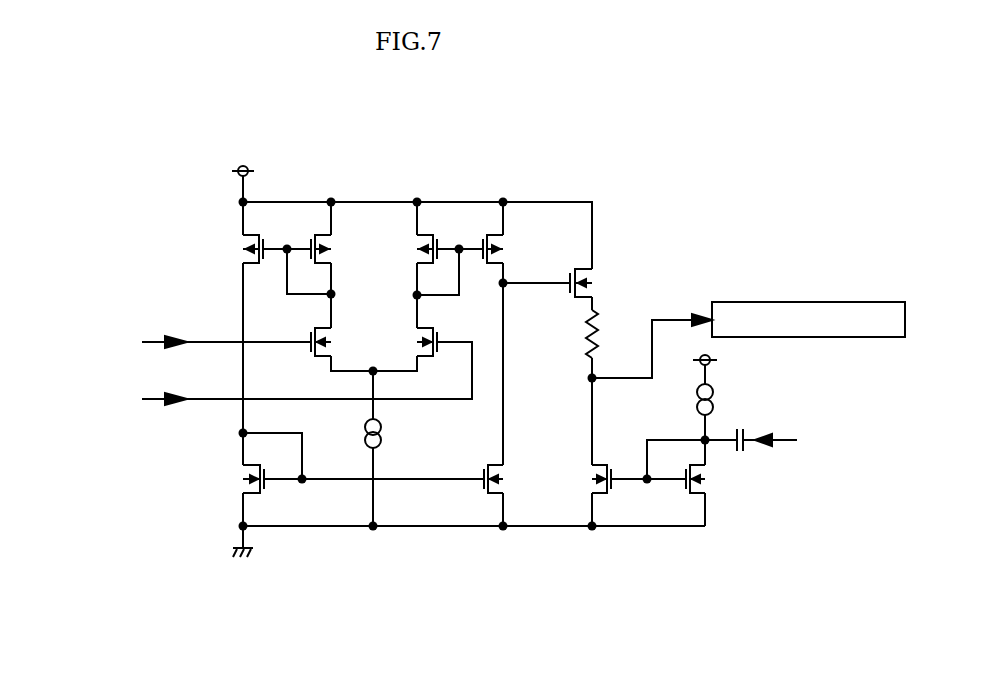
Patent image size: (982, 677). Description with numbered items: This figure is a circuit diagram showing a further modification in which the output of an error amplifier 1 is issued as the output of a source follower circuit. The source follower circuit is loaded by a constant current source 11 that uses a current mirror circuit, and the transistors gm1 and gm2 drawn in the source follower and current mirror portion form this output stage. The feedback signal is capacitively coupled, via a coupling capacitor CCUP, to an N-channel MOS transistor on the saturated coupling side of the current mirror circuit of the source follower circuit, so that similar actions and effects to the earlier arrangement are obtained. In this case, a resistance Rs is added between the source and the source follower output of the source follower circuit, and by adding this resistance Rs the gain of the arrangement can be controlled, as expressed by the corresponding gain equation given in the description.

The error amplifier 1 is at (373, 175).
The constant current source 11 is at (727, 388).
The transistor gm1 is at (599, 283).
The transistor gm2 is at (625, 484).
The resistance Rs is at (605, 334).
The coupling capacitor CCUP is at (727, 397).